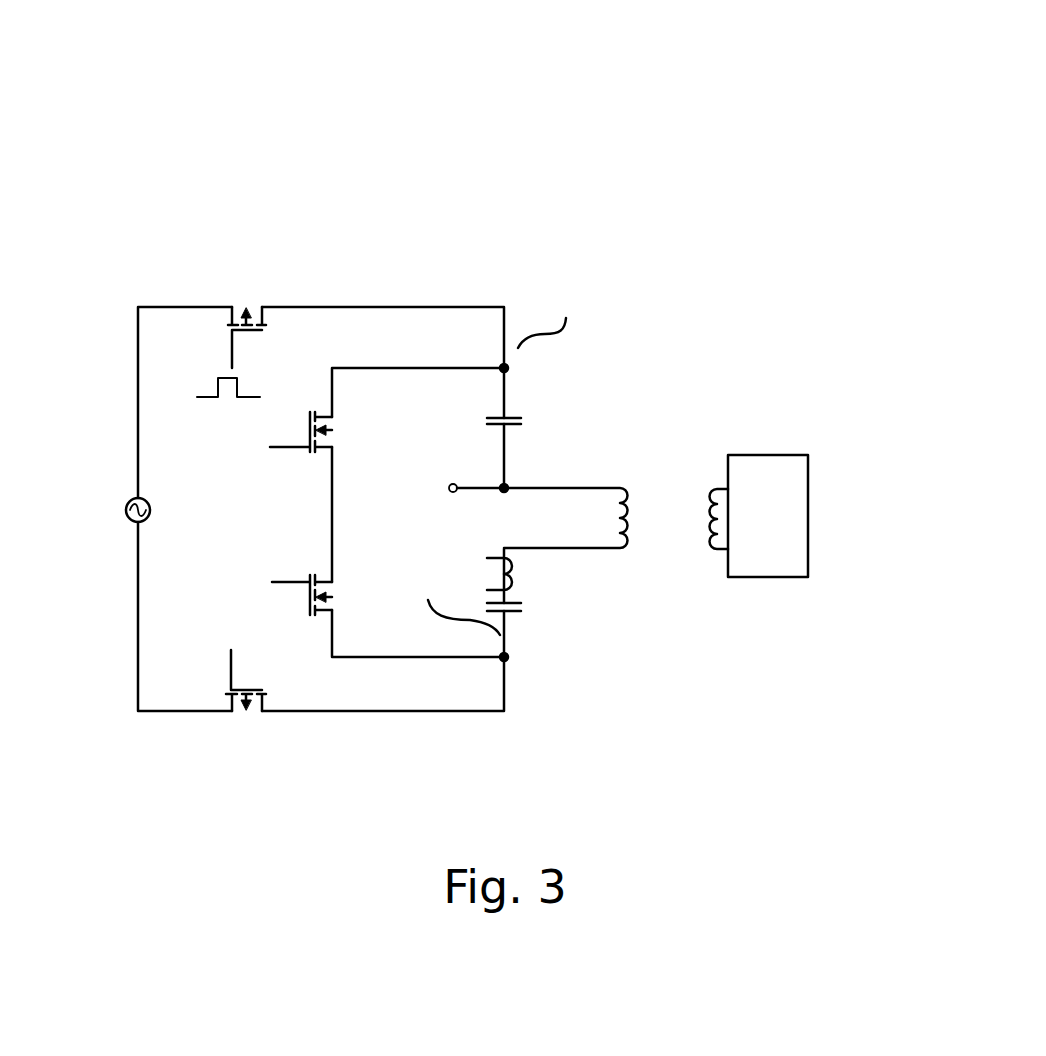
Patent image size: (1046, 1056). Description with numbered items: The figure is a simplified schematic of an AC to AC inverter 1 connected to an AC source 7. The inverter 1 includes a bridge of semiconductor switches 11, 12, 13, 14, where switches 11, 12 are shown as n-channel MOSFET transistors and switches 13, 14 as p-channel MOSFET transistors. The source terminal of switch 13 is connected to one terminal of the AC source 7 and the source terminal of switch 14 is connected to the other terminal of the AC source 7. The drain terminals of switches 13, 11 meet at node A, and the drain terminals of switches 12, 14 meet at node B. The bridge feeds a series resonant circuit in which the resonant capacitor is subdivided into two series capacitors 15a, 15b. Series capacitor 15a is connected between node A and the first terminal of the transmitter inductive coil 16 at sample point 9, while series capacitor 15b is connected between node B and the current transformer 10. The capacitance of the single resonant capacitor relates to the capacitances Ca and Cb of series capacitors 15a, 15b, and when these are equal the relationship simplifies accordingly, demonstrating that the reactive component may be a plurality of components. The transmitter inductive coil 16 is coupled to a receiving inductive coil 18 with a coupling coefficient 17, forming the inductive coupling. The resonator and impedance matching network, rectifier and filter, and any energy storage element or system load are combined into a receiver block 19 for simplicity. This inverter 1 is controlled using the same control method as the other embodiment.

The inverter 1 is at (383, 86).
The AC source 7 is at (128, 530).
The sample point 9 is at (445, 472).
The current transformer 10 is at (518, 575).
The switch 11 is at (310, 400).
The switch 12 is at (305, 598).
The switch 13 is at (222, 322).
The switch 14 is at (272, 698).
The series capacitor 15a is at (520, 400).
The series capacitor 15b is at (517, 617).
The transmitter inductive coil 16 is at (621, 480).
The coupling coefficient 17 is at (669, 532).
The receiving inductive coil 18 is at (717, 480).
The receiver block 19 is at (783, 515).